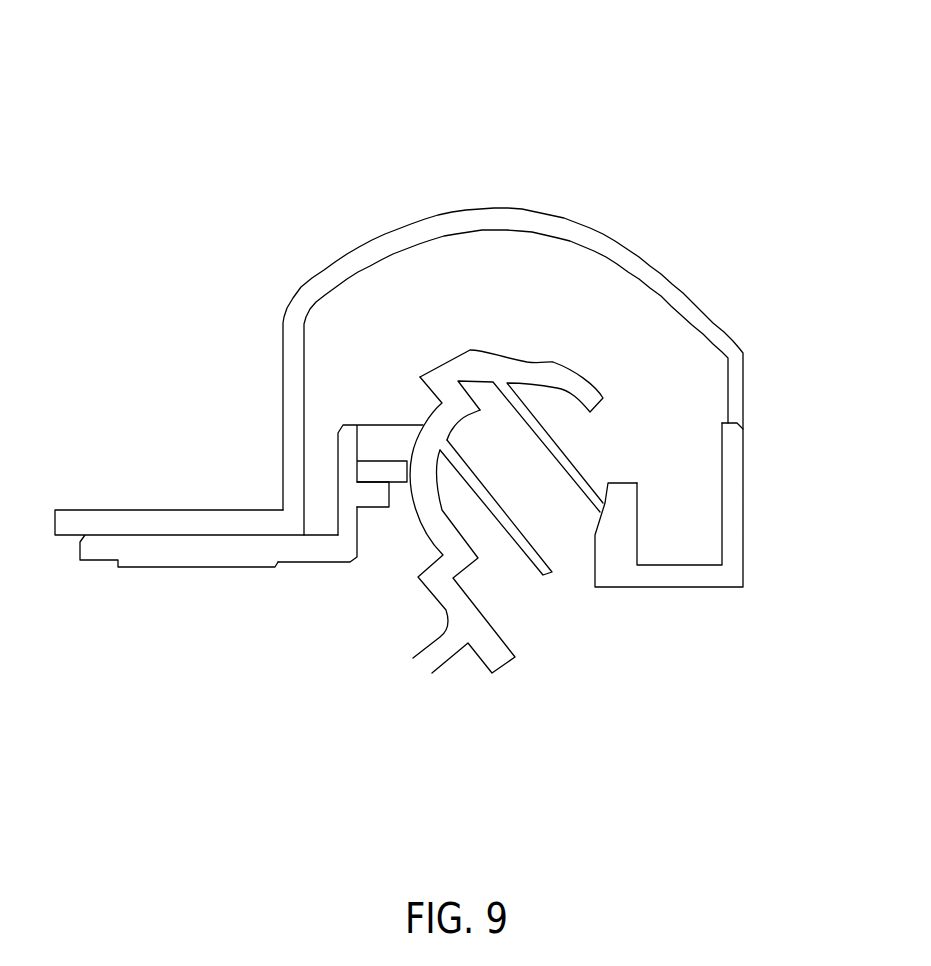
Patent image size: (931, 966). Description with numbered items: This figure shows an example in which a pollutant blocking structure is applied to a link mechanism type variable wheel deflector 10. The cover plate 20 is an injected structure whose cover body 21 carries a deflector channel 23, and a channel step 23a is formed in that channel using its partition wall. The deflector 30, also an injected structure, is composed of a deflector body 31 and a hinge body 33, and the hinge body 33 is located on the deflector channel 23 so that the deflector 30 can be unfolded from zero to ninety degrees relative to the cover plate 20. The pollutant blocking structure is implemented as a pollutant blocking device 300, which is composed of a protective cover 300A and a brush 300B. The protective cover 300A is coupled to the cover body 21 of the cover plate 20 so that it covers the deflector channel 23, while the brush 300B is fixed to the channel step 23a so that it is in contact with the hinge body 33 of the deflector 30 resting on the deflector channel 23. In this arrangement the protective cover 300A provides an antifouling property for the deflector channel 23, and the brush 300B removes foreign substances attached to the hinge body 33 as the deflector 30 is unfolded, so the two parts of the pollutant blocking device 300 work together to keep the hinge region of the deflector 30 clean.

The electronic device 10 is at (649, 146).
The cover plate 20 is at (670, 587).
The cover body 21 is at (172, 567).
The deflector channel 23 is at (702, 495).
The channel step 23a is at (365, 490).
The deflector 30 is at (407, 772).
The deflector body 31 is at (437, 652).
The hinge body 33 is at (427, 520).
The pollutant blocking device 300 is at (489, 78).
The protective cover 300A is at (388, 425).
The brush 300B is at (497, 226).